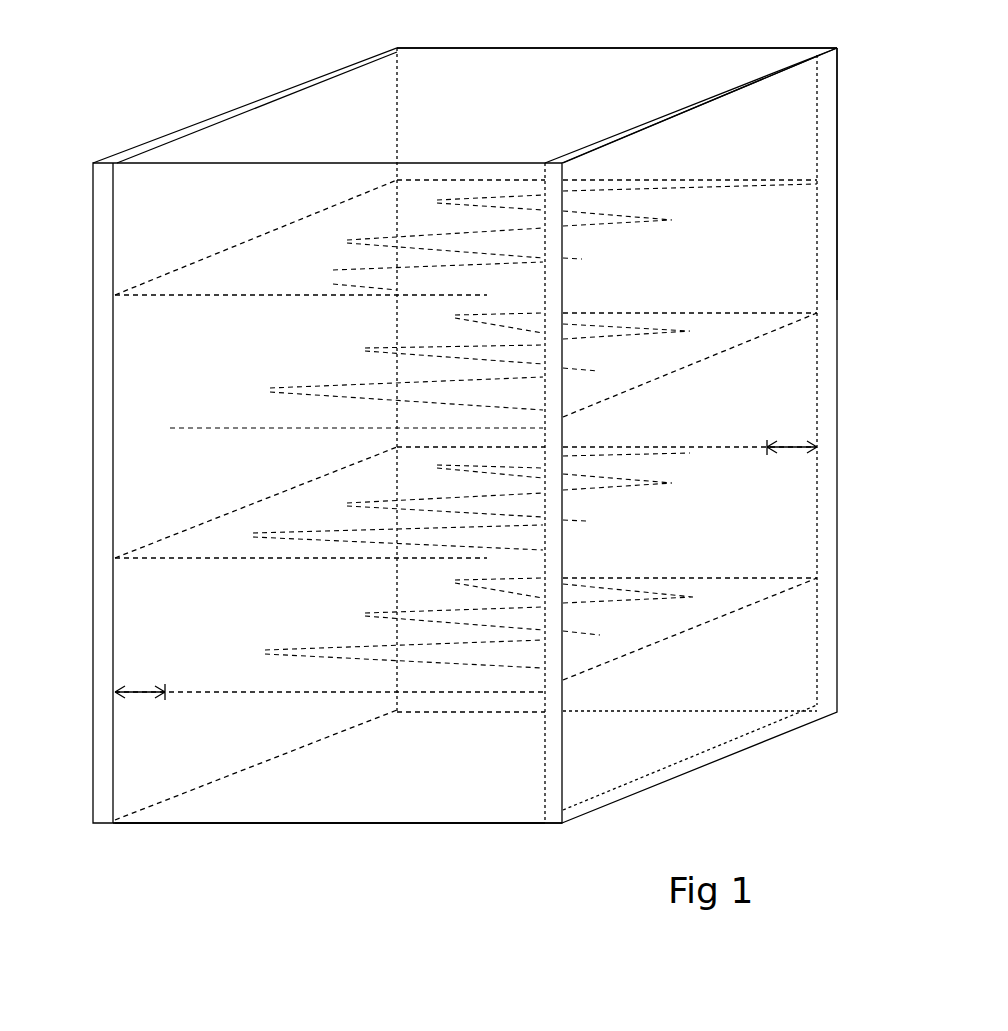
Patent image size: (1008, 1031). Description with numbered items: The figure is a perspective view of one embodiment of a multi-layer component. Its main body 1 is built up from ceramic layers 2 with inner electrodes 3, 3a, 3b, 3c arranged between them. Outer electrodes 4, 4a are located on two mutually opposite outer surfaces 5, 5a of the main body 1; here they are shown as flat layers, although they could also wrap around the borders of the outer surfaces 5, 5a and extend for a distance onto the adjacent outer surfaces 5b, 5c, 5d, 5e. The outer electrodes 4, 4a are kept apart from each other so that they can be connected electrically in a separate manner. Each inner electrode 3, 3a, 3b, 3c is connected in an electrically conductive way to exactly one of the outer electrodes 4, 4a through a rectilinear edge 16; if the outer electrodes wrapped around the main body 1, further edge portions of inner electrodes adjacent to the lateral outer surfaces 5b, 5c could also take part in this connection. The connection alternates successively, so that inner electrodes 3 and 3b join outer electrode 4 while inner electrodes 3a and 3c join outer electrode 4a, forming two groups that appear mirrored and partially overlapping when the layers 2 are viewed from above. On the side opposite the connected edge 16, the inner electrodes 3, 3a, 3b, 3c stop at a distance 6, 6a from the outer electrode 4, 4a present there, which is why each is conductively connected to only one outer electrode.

The main body 1 is at (587, 72).
The ceramic layers 2 is at (128, 333).
The inner electrode 3 is at (290, 250).
The inner electrode 3a is at (722, 333).
The inner electrode 3b is at (253, 525).
The inner electrode 3c is at (712, 597).
The outer electrode 4 is at (97, 648).
The outer electrode 4a is at (835, 175).
The outer surface 5 is at (212, 617).
The outer surface 5a is at (782, 496).
The adjacent outer surface 5b is at (372, 767).
The adjacent outer surface 5c is at (760, 110).
The adjacent outer surface 5d is at (503, 128).
The adjacent outer surface 5e is at (441, 809).
The distance 6 is at (140, 695).
The distance 6a is at (800, 440).
The rectilinear edge 16 is at (198, 262).